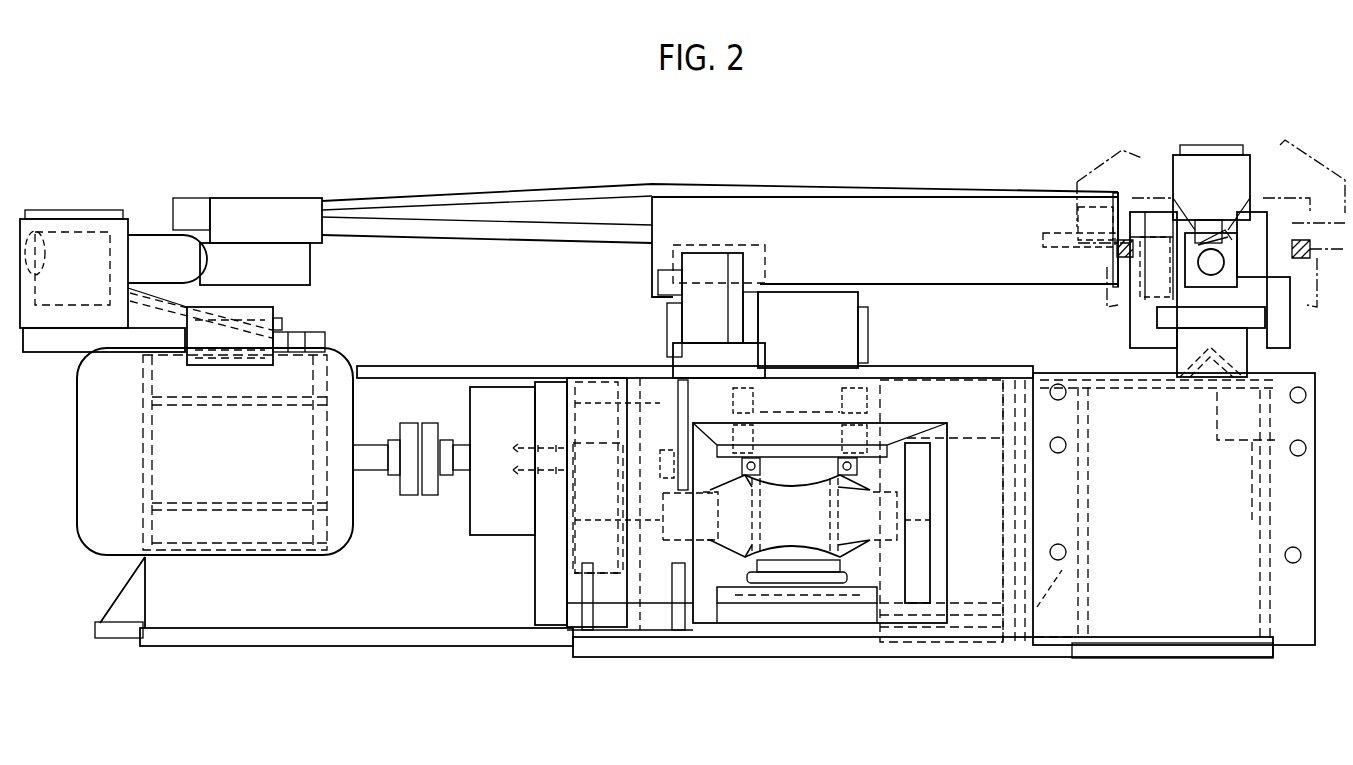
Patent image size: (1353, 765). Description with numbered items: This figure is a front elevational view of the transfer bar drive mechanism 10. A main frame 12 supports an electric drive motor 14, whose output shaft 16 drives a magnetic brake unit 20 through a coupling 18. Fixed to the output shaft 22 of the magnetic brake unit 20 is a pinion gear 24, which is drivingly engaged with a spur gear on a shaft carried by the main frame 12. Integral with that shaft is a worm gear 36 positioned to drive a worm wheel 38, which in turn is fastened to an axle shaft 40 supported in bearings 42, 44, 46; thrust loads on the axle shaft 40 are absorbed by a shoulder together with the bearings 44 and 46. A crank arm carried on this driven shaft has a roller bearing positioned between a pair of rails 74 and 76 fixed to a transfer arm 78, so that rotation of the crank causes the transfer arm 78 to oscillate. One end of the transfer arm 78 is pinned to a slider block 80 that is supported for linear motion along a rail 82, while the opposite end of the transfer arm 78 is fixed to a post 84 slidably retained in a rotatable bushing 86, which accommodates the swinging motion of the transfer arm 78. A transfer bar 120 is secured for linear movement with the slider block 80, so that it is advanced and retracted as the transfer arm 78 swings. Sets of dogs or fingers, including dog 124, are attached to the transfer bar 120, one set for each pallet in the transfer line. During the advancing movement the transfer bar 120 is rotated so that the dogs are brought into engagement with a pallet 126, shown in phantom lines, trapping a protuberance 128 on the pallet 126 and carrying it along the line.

The transfer bar drive mechanism 10 is at (498, 170).
The main frame 12 is at (403, 362).
The electric drive motor 14 is at (333, 557).
The output shaft 16 is at (373, 471).
The coupling 18 is at (433, 497).
The magnetic brake unit 20 is at (498, 537).
The output shaft 22 is at (551, 435).
The pinion gear 24 is at (600, 445).
The worm gear 36 is at (812, 534).
The worm wheel 38 is at (932, 497).
The axle shaft 40 is at (820, 388).
The bearing 42 is at (842, 594).
The bearing 44 is at (762, 437).
The bearing 46 is at (882, 385).
The rail 74 is at (993, 292).
The rail 76 is at (1029, 266).
The transfer arm 78 is at (684, 186).
The slider block 80 is at (1129, 326).
The rail 82 is at (1263, 318).
The post 84 is at (153, 234).
The rotatable bushing 86 is at (55, 224).
The transfer bar 120 is at (1194, 250).
The dog 124 is at (1232, 237).
The pallet 126 is at (1095, 170).
The protuberance 128 is at (1228, 230).